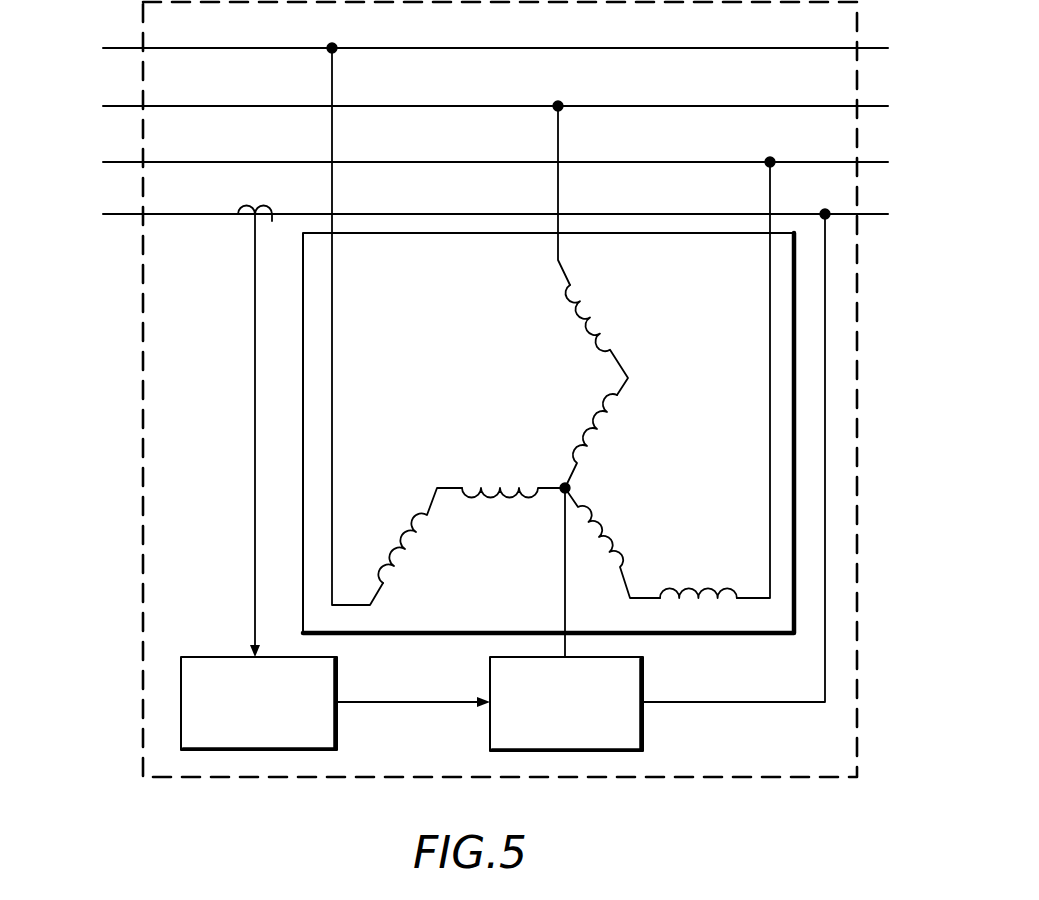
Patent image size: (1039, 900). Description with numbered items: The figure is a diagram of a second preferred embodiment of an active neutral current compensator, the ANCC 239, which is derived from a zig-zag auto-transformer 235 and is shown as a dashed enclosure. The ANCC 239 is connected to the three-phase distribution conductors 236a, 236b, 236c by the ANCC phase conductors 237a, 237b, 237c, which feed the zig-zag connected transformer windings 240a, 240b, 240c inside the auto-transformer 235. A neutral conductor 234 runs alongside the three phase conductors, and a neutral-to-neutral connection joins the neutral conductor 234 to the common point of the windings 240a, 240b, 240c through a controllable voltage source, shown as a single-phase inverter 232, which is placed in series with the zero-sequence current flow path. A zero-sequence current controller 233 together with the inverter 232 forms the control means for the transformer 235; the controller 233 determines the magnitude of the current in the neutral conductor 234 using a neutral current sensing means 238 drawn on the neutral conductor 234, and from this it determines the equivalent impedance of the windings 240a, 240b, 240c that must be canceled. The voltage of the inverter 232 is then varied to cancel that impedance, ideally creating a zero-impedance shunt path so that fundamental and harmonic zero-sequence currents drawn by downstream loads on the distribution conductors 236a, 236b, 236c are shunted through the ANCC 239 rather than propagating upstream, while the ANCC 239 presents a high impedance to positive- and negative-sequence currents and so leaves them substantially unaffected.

The single-phase inverter 232 is at (644, 733).
The zero-sequence current controller 233 is at (338, 733).
The neutral conductor 234 is at (113, 215).
The zig-zag auto-transformer 235 is at (795, 403).
The three-phase distribution conductor 236a is at (113, 49).
The three-phase distribution conductor 236b is at (113, 107).
The three-phase distribution conductor 236c is at (113, 163).
The ANCC phase conductor 237a is at (333, 78).
The ANCC phase conductor 237b is at (559, 130).
The ANCC phase conductor 237c is at (770, 190).
The neutral current sensing means 238 is at (240, 216).
The ANCC 239 is at (764, 779).
The transformer winding 240a is at (421, 548).
The transformer winding 240b is at (582, 432).
The transformer winding 240c is at (661, 597).